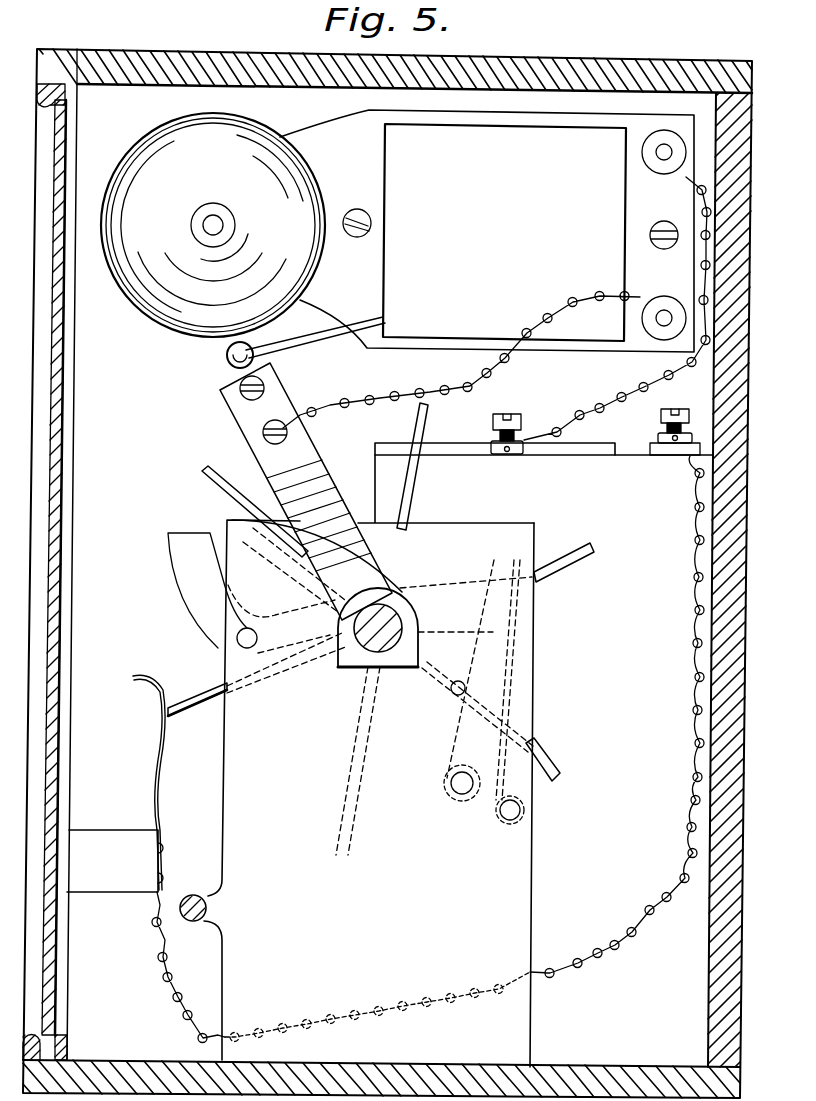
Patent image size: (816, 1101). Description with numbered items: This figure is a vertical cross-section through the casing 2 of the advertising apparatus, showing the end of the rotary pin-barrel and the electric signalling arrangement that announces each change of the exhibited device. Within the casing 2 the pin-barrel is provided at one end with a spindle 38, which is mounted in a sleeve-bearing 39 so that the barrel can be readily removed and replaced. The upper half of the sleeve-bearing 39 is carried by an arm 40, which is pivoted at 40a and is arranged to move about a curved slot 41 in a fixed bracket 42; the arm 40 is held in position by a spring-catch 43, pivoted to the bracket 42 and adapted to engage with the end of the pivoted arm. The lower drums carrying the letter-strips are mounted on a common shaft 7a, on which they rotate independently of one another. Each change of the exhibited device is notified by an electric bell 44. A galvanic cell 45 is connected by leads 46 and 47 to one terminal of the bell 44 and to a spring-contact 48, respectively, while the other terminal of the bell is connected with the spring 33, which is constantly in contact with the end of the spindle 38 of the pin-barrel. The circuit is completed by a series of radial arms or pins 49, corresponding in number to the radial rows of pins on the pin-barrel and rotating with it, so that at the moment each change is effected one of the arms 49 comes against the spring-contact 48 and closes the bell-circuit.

The casing 2 is at (741, 271).
The shaft 7a is at (207, 910).
The spring 33 is at (318, 474).
The spindle 38 is at (388, 668).
The sleeve-bearing 39 is at (340, 643).
The arm 40 is at (203, 597).
The pivot 40a is at (243, 641).
The curved slot 41 is at (336, 590).
The fixed bracket 42 is at (369, 793).
The spring-catch 43 is at (490, 684).
The electric bell 44 is at (504, 232).
The galvanic cell 45 is at (535, 466).
The lead 46 is at (617, 308).
The lead 47 is at (690, 730).
The spring-contact 48 is at (158, 808).
The radial arms or pins 49 is at (408, 490).